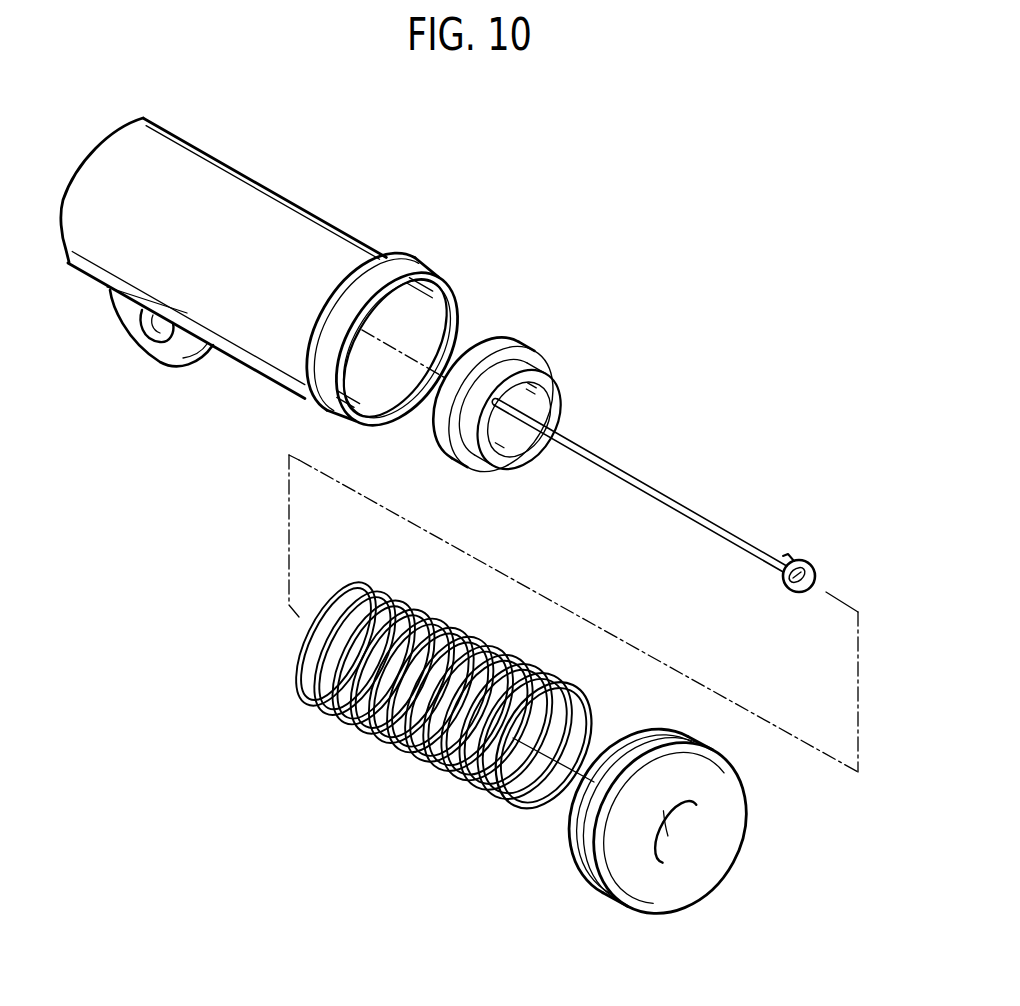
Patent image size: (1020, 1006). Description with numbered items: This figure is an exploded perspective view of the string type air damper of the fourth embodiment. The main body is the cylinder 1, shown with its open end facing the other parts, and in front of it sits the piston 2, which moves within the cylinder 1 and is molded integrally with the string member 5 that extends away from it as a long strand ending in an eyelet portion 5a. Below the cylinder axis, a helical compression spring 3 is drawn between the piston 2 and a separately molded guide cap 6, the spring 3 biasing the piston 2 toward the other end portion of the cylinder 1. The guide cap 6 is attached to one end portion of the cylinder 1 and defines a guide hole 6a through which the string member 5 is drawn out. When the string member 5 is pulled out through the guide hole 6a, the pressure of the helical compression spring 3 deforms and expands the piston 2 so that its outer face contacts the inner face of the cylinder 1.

The cylinder 1 is at (255, 197).
The piston 2 is at (488, 350).
The helical compression spring 3 is at (380, 740).
The string member 5 is at (648, 488).
The eyelet end of rod 5a is at (807, 563).
The guide cap 6 is at (668, 893).
The guide hole 6a is at (677, 827).